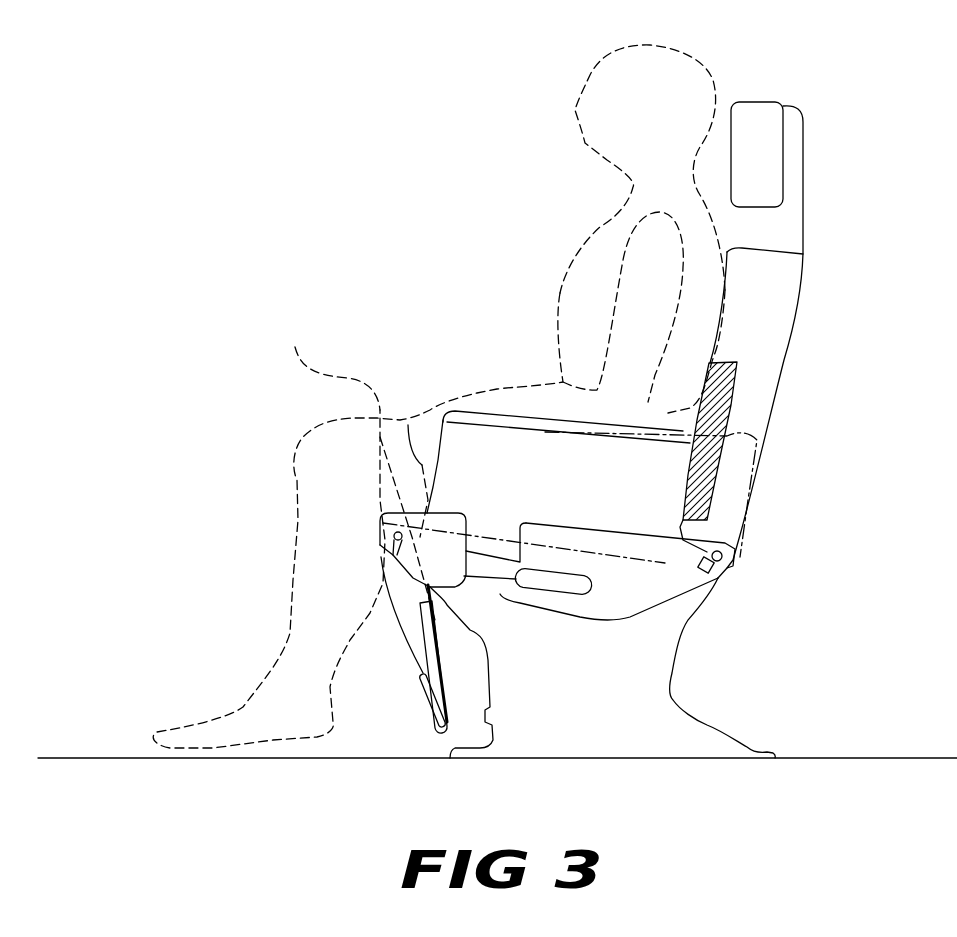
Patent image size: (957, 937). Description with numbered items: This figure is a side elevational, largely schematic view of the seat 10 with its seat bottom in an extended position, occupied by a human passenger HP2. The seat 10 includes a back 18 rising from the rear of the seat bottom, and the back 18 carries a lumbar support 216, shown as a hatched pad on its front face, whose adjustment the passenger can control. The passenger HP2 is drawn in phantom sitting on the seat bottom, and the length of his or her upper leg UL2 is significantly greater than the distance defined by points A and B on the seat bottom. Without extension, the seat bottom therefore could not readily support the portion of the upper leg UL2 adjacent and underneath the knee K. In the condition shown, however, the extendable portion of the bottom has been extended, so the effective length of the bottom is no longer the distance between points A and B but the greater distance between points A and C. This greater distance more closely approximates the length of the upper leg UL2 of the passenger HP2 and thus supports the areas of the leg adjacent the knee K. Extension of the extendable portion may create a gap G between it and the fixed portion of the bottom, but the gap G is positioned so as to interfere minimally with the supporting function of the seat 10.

The seat 10 is at (838, 68).
The back 18 is at (797, 316).
The lumbar support 216 is at (760, 433).
The point A is at (663, 597).
The point B is at (455, 515).
The point C is at (400, 505).
The gap G is at (494, 552).
The knee K is at (350, 418).
The human passenger HP2 is at (500, 247).
The upper leg UL2 is at (330, 365).